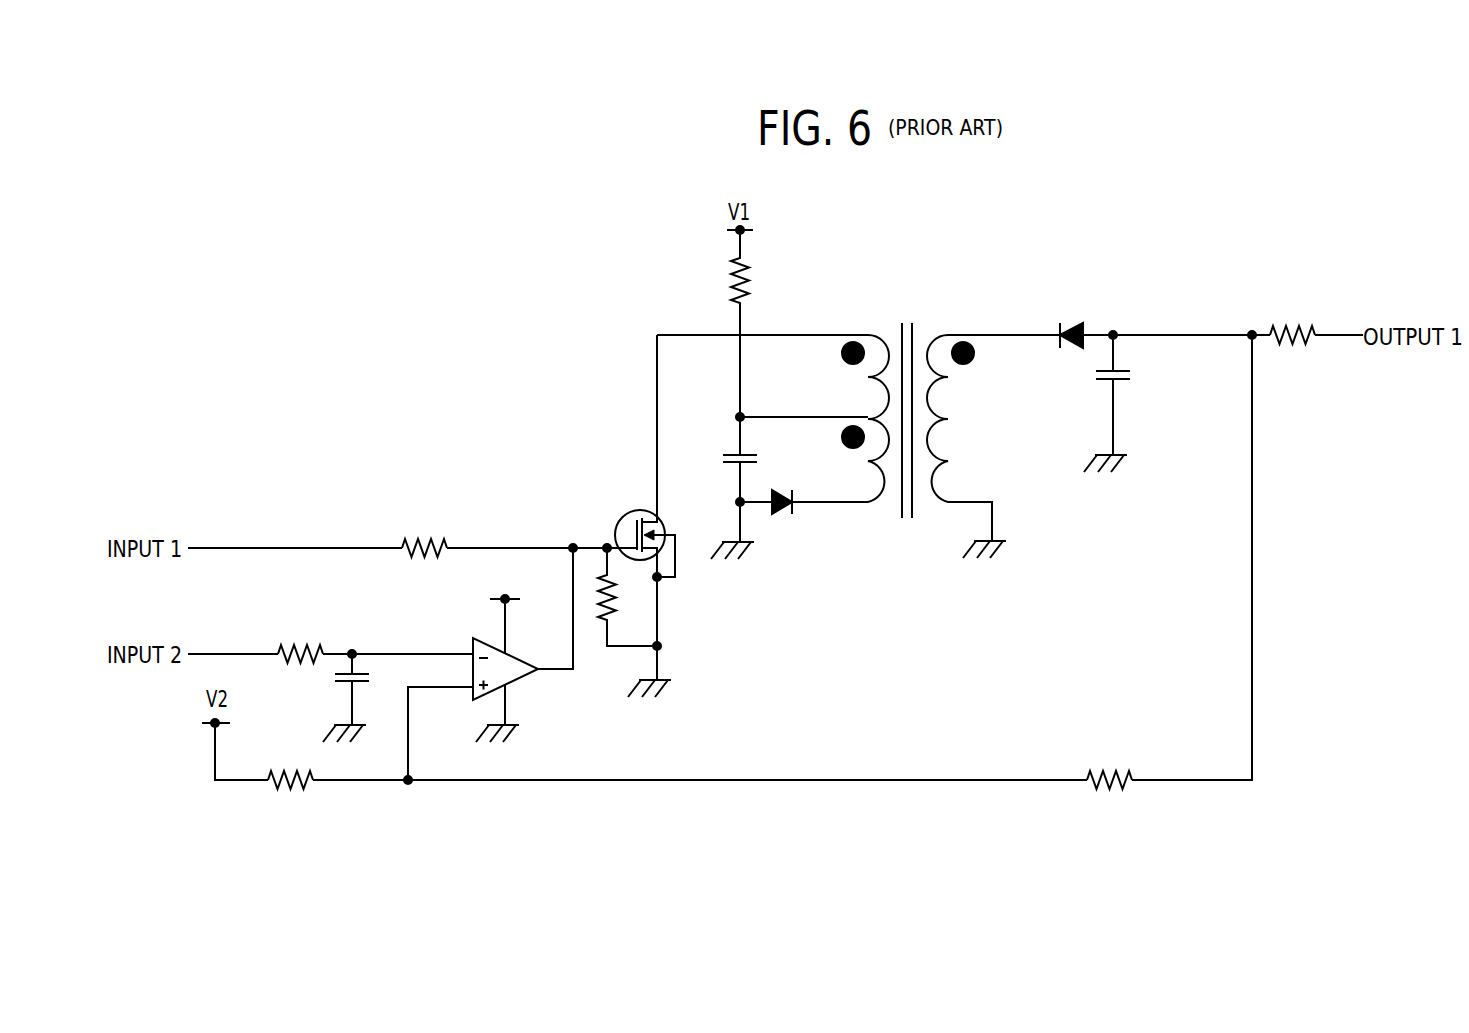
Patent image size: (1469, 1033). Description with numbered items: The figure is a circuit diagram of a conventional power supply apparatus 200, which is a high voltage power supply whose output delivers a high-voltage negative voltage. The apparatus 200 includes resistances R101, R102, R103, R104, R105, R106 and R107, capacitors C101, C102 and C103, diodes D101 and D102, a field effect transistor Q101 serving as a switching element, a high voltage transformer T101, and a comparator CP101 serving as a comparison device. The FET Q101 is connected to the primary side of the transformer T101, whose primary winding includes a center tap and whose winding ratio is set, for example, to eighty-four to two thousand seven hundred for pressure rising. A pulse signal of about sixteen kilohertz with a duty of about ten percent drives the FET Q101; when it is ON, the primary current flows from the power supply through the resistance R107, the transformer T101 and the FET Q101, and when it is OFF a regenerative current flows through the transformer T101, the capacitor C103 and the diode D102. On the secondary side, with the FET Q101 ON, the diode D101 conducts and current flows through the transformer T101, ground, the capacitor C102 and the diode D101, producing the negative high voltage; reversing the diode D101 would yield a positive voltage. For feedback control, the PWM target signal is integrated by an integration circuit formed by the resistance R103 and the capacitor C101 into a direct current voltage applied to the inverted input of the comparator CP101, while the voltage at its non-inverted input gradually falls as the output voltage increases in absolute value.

The power supply apparatus 200 is at (948, 250).
The resistance R101 is at (426, 530).
The resistance R102 is at (602, 588).
The resistance R103 is at (301, 639).
The resistance R104 is at (289, 764).
The resistance R105 is at (1110, 768).
The resistance R106 is at (1291, 322).
The resistance R107 is at (769, 323).
The capacitor C101 is at (367, 692).
The capacitor C102 is at (1132, 403).
The capacitor C103 is at (760, 475).
The diode D101 is at (1081, 321).
The diode D102 is at (804, 491).
The high voltage transformer T101 is at (924, 419).
The field effect transistor Q101 is at (606, 516).
The comparator CP101 is at (508, 670).